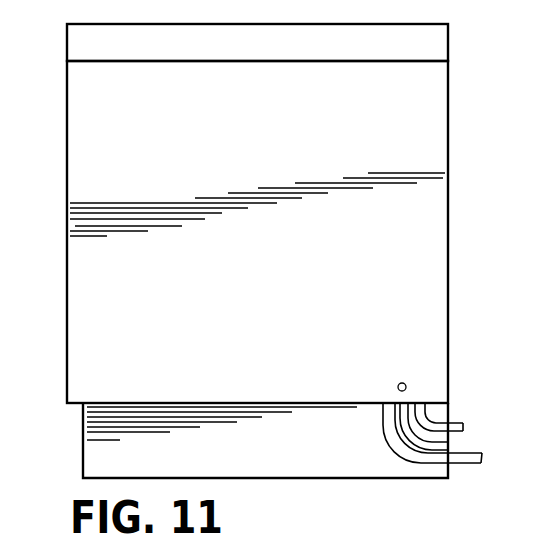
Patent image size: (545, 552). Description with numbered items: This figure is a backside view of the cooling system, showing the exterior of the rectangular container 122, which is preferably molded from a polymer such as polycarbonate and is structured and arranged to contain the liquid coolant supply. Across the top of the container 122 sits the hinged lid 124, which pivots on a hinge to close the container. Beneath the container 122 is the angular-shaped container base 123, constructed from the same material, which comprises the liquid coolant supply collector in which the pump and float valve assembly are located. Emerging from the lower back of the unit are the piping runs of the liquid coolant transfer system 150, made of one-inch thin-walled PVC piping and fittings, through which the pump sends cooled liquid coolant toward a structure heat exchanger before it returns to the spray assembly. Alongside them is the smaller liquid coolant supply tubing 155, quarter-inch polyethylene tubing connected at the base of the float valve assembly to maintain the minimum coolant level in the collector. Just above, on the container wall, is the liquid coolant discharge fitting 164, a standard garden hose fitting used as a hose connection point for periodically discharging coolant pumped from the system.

The hinged lid 124 is at (452, 43).
The container 122 is at (354, 252).
The container base 123 is at (83, 452).
The liquid coolant discharge fitting 164 is at (407, 383).
The liquid coolant supply tubing 155 is at (432, 422).
The liquid coolant transfer system 150 is at (425, 442).